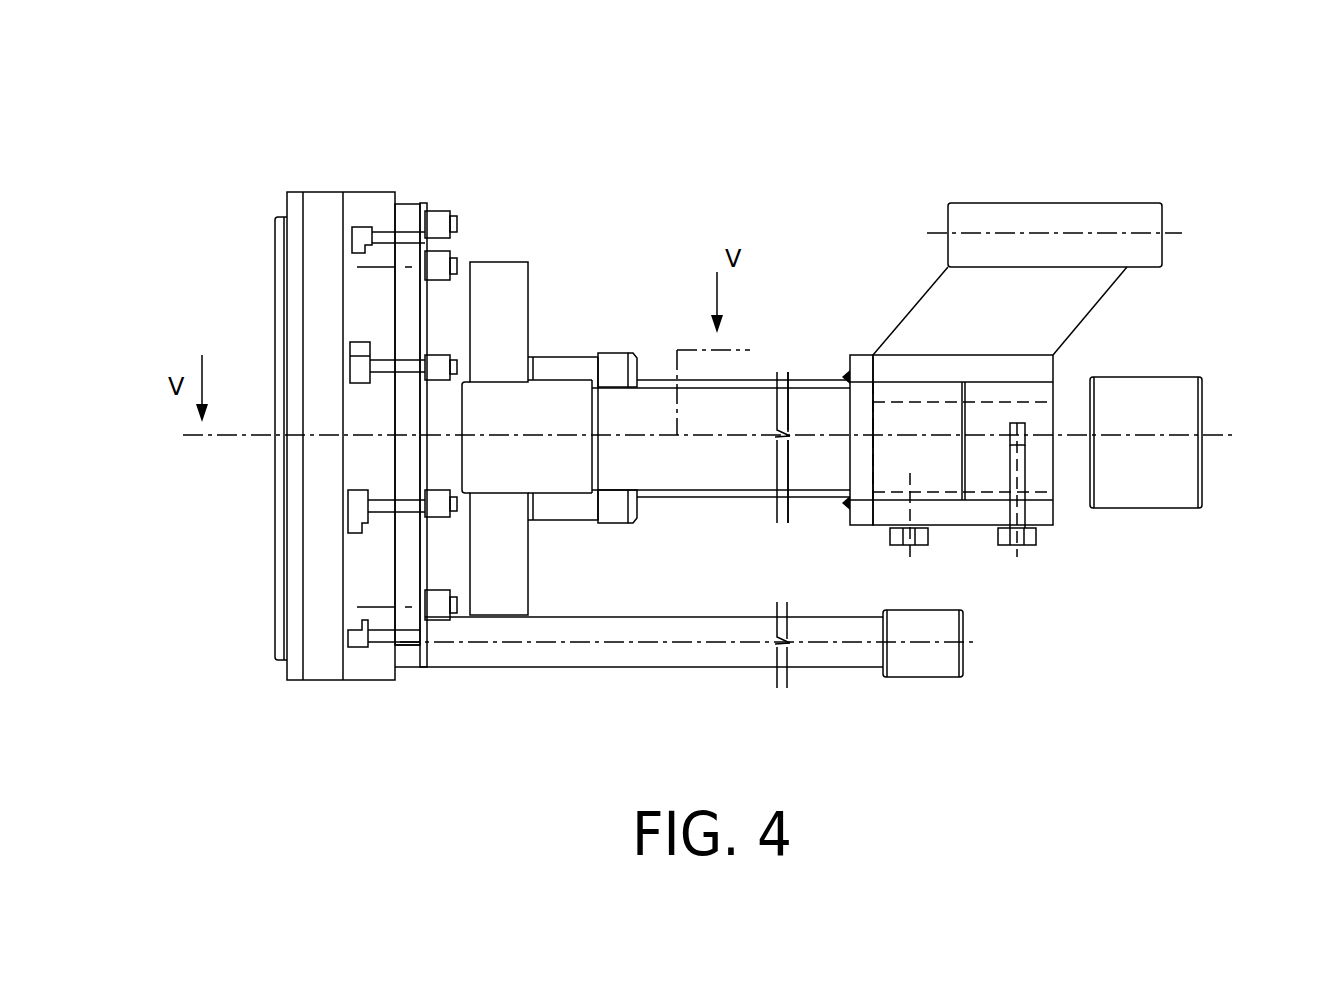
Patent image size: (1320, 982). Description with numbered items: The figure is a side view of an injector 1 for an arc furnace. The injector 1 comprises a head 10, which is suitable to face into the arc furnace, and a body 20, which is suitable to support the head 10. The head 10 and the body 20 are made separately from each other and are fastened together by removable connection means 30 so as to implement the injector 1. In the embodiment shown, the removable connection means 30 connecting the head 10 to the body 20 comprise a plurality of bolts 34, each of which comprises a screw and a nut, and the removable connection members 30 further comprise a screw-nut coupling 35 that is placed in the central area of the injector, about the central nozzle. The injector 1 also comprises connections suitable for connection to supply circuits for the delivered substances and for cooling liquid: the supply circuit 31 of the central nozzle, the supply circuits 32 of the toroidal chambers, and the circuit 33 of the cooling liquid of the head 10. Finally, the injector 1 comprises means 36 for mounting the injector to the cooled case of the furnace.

The injector 1 is at (189, 77).
The head 10 is at (322, 207).
The body 20 is at (460, 288).
The removable connection means 30 is at (438, 213).
The supply circuit of the central nozzle 31 is at (753, 378).
The supply circuits of the toroidal chambers 32 is at (688, 475).
The circuit of the cooling liquid of the head 33 is at (635, 660).
The bolts 34 is at (448, 622).
The screw-nut coupling 35 is at (612, 505).
The means for mounting 36 is at (1087, 291).